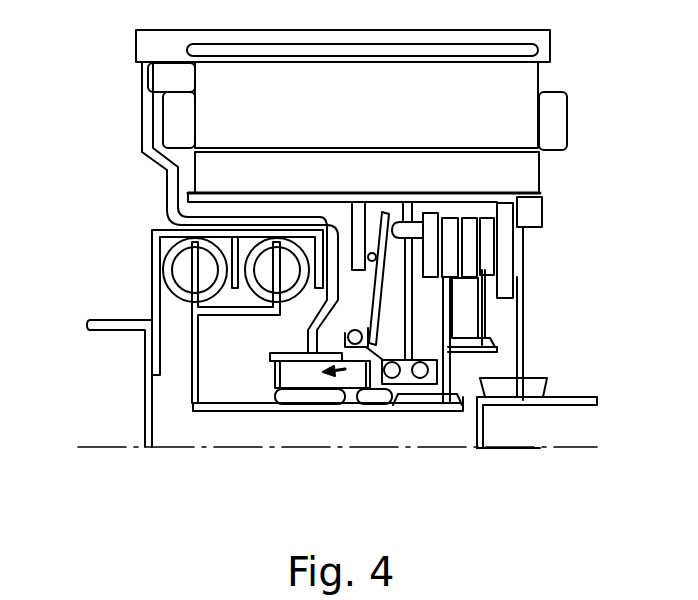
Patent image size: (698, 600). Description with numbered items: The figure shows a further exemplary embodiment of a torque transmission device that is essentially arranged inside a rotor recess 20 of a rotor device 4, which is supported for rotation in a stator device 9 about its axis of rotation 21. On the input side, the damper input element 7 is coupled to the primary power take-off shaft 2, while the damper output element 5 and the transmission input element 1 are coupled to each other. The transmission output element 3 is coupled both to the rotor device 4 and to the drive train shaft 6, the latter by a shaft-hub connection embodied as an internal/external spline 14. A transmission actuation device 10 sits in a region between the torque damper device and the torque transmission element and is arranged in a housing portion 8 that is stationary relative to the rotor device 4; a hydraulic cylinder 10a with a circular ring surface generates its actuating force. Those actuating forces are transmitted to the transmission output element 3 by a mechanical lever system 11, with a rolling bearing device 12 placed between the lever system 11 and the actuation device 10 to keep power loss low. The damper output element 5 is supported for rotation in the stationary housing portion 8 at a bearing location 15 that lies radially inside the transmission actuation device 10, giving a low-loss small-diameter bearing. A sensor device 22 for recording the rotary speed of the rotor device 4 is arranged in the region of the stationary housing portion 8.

The transmission input element 1 is at (485, 323).
The primary power take-off shaft 2 is at (110, 330).
The transmission output element 3 is at (540, 197).
The rotor device 4 is at (540, 175).
The damper output element 5 is at (238, 412).
The drive train shaft 6 is at (592, 395).
The damper input element 7 is at (152, 268).
The housing portion 8 is at (142, 113).
The stator device 9 is at (528, 82).
The transmission actuation device 10 is at (358, 395).
The hydraulic cylinder 10a is at (375, 335).
The mechanical lever system 11 is at (386, 292).
The rolling bearing device 12 is at (392, 378).
The internal/external spline 14 is at (525, 407).
The bearing location 15 is at (277, 397).
The rotor recess 20 is at (570, 247).
The axis of rotation 21 is at (122, 450).
The sensor device 22 is at (543, 215).